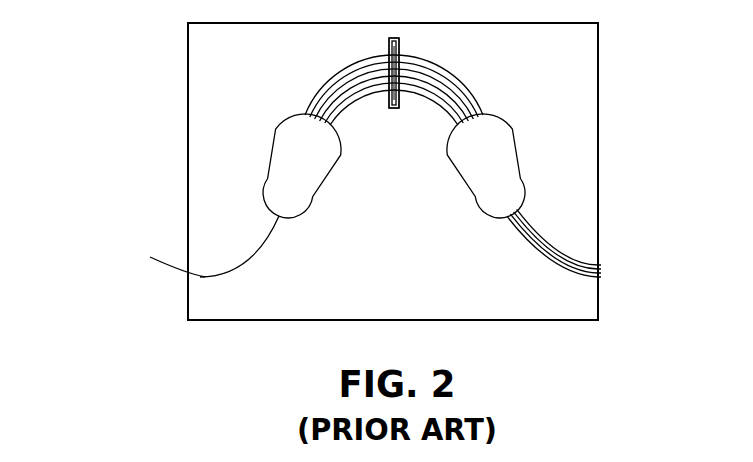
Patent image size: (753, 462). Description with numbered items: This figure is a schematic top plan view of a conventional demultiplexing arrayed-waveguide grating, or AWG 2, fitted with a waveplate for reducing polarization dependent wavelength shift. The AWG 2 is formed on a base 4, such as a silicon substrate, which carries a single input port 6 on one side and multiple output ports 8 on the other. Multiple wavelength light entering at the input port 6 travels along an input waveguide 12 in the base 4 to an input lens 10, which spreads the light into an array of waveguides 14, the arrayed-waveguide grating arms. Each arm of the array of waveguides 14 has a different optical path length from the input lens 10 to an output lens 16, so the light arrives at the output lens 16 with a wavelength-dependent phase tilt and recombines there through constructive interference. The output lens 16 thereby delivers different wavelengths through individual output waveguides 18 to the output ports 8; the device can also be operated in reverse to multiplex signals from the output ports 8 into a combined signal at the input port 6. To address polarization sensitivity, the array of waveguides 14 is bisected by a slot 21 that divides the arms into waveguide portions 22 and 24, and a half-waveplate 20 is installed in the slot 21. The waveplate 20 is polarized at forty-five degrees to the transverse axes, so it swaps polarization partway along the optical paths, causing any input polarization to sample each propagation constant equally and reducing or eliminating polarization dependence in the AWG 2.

The arrayed-waveguide grating 2 is at (130, 90).
The base 4 is at (213, 23).
The input port 6 is at (167, 259).
The output ports 8 is at (607, 270).
The input lens 10 is at (272, 146).
The input waveguide 12 is at (235, 263).
The array of waveguides 14 is at (394, 75).
The output lens 16 is at (517, 147).
The output waveguides 18 is at (523, 265).
The half-waveplate 20 is at (393, 108).
The slot 21 is at (395, 38).
The waveguide portion 22 is at (296, 89).
The waveguide portion 24 is at (501, 80).